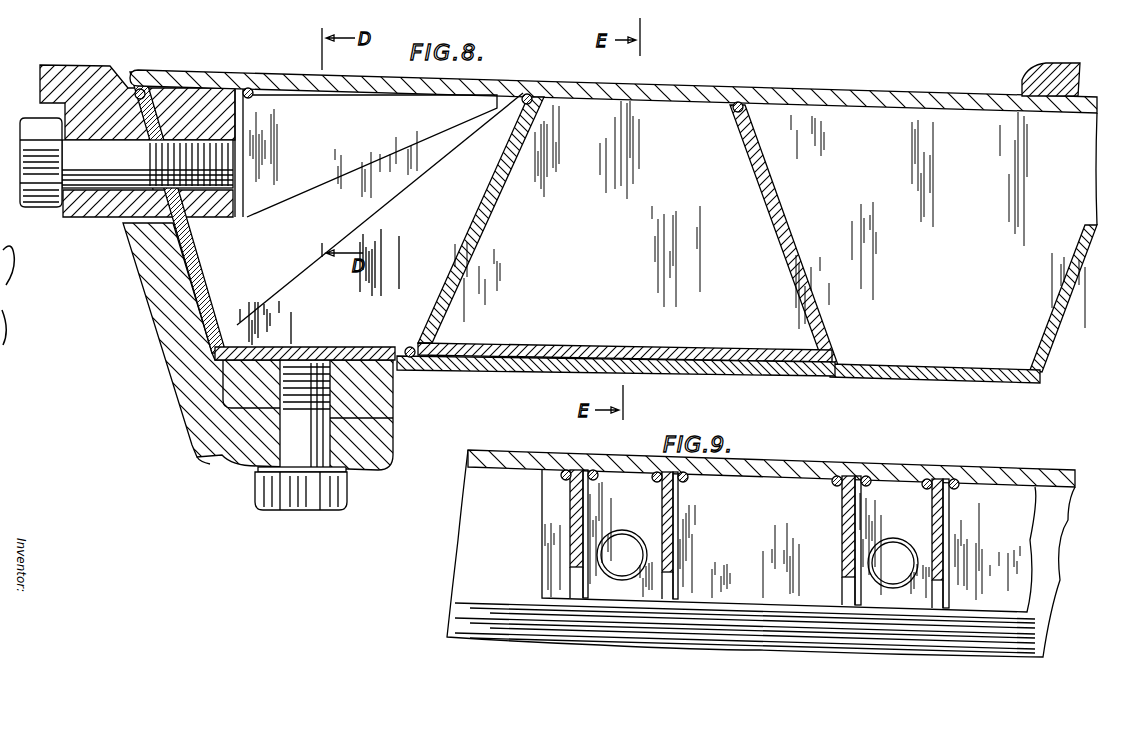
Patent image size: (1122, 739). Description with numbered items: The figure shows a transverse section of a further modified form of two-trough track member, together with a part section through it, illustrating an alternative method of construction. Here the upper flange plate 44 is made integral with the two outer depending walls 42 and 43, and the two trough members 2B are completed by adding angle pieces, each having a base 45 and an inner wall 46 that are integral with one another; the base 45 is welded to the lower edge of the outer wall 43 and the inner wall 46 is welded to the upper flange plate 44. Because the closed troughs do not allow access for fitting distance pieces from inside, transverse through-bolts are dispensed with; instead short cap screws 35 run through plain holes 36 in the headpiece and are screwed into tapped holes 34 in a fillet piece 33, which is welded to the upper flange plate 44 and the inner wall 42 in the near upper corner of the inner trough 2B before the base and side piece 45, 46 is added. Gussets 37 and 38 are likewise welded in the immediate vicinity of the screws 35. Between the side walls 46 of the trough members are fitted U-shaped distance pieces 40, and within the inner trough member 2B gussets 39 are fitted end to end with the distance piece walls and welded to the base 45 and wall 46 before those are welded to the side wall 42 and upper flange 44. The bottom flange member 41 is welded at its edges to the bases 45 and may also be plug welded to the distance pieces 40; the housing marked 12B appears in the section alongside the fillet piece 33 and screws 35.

In FIG. 8, the housing 12B is at (170, 343).
In FIG. 8, the fillet piece 33 is at (226, 212).
In FIG. 9, the fillet piece 33 is at (762, 500).
In FIG. 8, the tapped holes 34 is at (238, 136).
In FIG. 8, the cap screws 35 is at (100, 205).
In FIG. 9, the cap screws 35 is at (617, 540).
In FIG. 8, the plain holes 36 is at (62, 214).
In FIG. 9, the gusset 37 is at (583, 508).
In FIG. 8, the gusset 38 is at (345, 128).
In FIG. 9, the gusset 38 is at (675, 502).
In FIG. 8, the gussets 39 is at (300, 298).
In FIG. 8, the U-shaped distance pieces 40 is at (737, 350).
In FIG. 8, the bottom flange member 41 is at (500, 362).
In FIG. 8, the outer depending wall 42 is at (198, 305).
In FIG. 9, the outer depending wall 42 is at (735, 632).
In FIG. 8, the outer depending wall 43 is at (1070, 297).
In FIG. 8, the upper flange plate 44 is at (610, 90).
In FIG. 8, the base 45 is at (330, 357).
In FIG. 8, the inner wall 46 is at (478, 217).
In FIG. 8, the trough members 2B is at (314, 235).